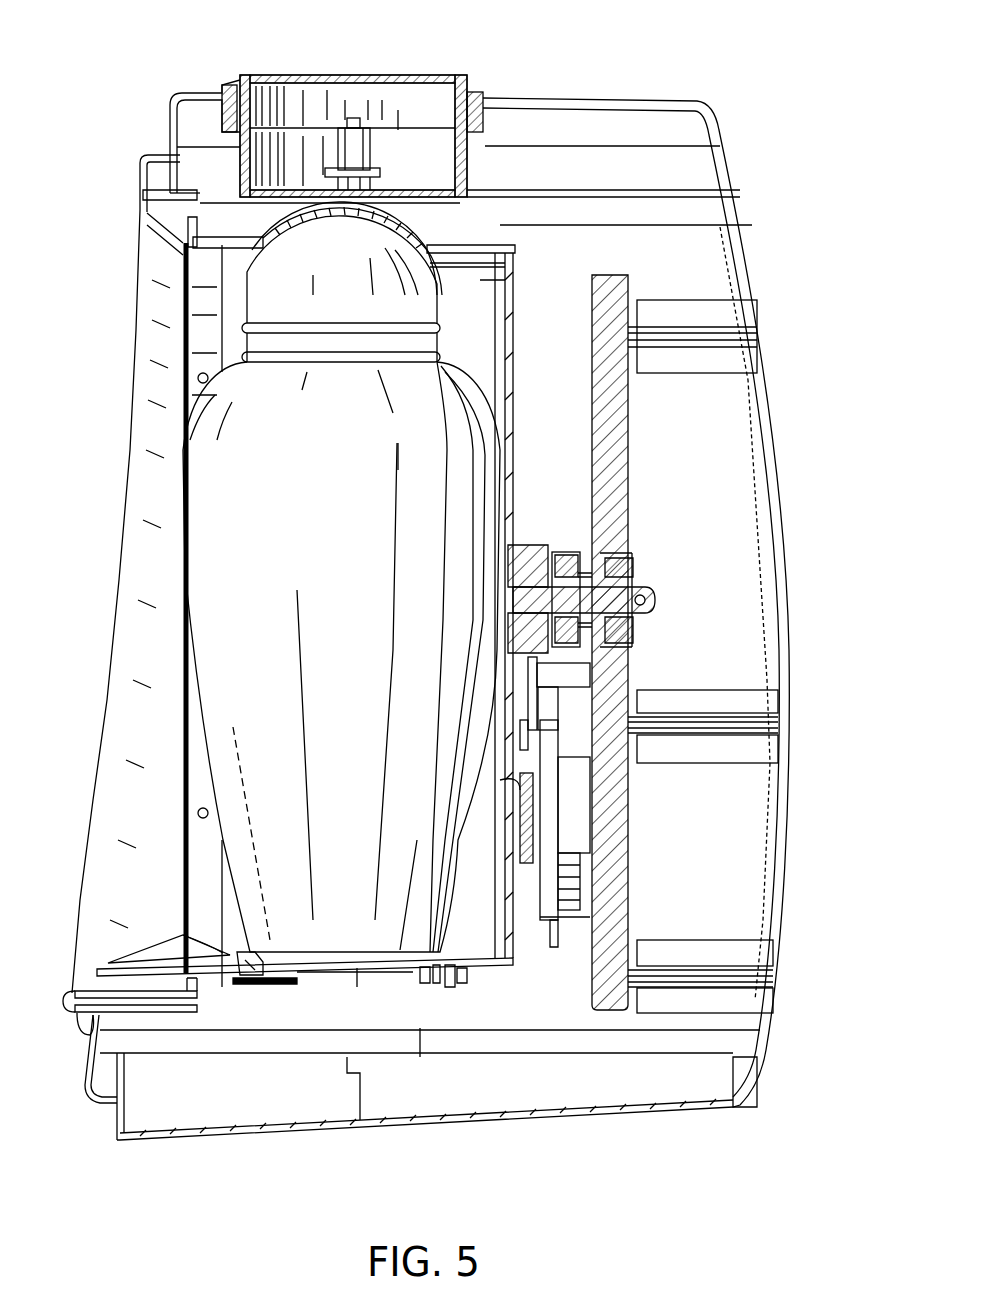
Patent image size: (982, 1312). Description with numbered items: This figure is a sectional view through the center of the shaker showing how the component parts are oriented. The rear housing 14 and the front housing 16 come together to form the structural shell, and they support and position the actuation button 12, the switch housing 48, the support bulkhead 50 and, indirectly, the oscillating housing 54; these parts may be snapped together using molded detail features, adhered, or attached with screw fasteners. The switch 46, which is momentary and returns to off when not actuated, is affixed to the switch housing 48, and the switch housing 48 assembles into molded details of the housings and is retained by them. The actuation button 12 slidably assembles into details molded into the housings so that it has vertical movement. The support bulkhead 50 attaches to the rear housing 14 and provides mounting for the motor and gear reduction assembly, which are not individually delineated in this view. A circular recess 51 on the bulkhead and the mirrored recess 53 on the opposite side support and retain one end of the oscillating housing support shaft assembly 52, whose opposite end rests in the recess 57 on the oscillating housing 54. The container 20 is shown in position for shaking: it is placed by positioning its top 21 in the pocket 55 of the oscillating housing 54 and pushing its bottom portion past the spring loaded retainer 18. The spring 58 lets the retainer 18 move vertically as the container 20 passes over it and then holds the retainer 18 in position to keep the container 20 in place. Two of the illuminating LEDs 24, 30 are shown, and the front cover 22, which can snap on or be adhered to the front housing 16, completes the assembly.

The actuation button 12 is at (323, 97).
The rear housing 14 is at (537, 1100).
The front housing 16 is at (162, 1110).
The spring loaded retainer 18 is at (237, 958).
The container 20 is at (230, 680).
The top 21 is at (280, 275).
The front cover 22 is at (140, 565).
The illuminating LED 24 is at (208, 812).
The illuminating LED 30 is at (202, 374).
The switch 46 is at (357, 147).
The switch housing 48 is at (472, 167).
The support bulkhead 50 is at (598, 275).
The recess 51 is at (568, 553).
The oscillating housing support shaft assembly 52 is at (655, 578).
The recess 53 is at (633, 553).
The oscillating housing 54 is at (512, 290).
The pocket 55 is at (392, 212).
The recess 57 is at (535, 545).
The spring 58 is at (333, 985).